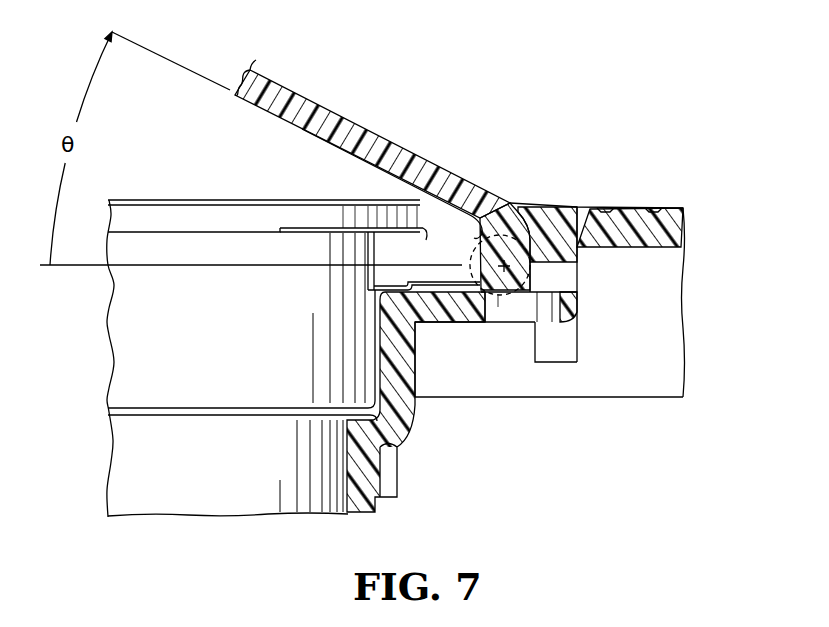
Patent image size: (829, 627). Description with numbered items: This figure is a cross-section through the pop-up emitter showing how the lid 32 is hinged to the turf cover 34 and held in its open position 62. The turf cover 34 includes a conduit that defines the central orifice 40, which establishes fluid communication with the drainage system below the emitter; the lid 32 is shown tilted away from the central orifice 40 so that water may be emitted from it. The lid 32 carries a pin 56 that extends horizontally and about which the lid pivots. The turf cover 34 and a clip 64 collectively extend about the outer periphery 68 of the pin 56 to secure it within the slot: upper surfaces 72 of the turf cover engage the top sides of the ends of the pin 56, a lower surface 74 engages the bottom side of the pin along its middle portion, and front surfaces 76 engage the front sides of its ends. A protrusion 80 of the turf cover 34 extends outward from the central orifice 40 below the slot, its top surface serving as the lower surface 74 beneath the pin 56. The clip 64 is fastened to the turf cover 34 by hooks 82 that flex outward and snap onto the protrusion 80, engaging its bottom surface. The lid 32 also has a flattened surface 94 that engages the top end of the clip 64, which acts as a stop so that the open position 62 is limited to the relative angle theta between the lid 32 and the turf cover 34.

The lid 32 is at (372, 135).
The open position 62 is at (294, 86).
The turf cover 34 is at (424, 428).
The central orifice 40 is at (206, 332).
The pin 56 is at (484, 293).
The clip 64 is at (585, 207).
The outer periphery 68 is at (563, 233).
The upper surfaces 72 is at (478, 206).
The lower surface 74 is at (368, 238).
The front surfaces 76 is at (430, 285).
The protrusion 80 is at (587, 301).
The hooks 82 is at (560, 345).
The flattened surface 94 is at (528, 205).